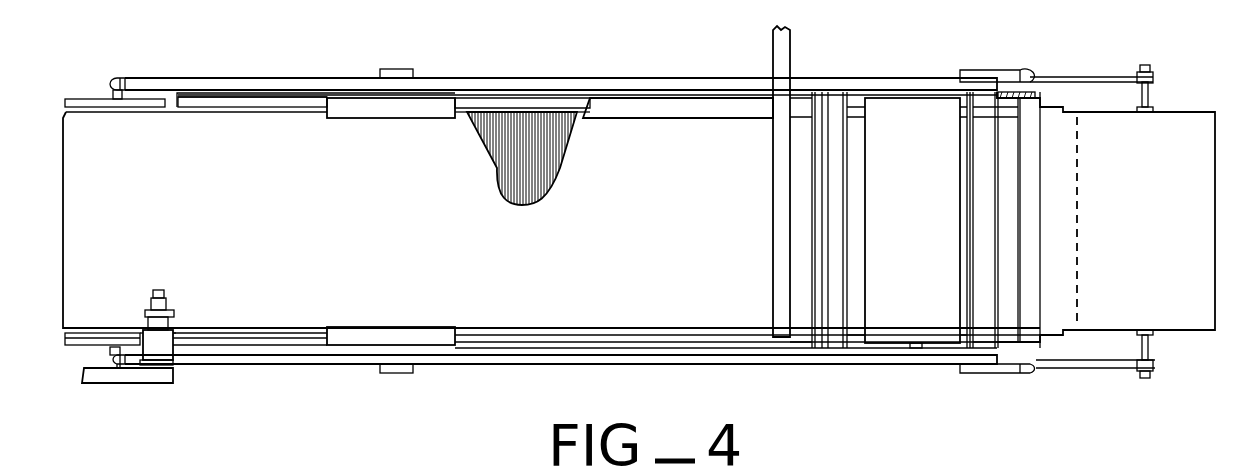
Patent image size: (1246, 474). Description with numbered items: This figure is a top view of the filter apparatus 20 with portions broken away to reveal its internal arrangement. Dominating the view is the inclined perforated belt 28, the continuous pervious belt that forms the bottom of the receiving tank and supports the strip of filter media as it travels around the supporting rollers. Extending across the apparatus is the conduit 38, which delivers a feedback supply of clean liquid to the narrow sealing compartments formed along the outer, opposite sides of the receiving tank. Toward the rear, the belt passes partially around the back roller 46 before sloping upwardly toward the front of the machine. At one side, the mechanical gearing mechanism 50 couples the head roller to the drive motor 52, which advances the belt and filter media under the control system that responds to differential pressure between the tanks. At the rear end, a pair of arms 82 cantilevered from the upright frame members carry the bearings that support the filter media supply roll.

The filter apparatus 20 is at (640, 75).
The inclined perforated belt 28 is at (666, 246).
The conduit 38 is at (790, 55).
The back roller 46 is at (928, 212).
The mechanical gearing mechanism 50 is at (162, 342).
The drive motor 52 is at (146, 384).
The arms 82 is at (1088, 370).